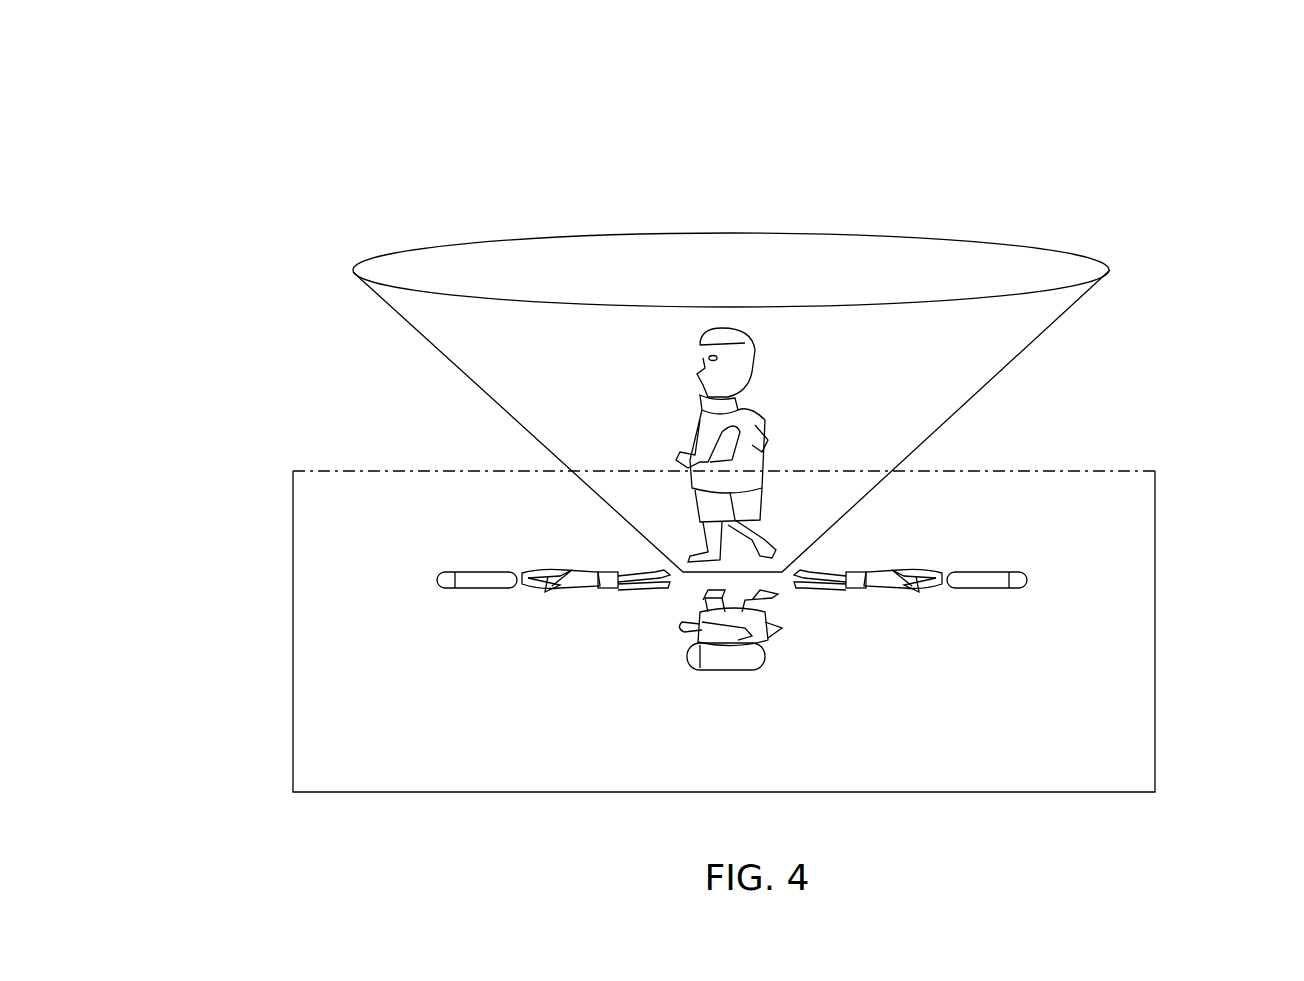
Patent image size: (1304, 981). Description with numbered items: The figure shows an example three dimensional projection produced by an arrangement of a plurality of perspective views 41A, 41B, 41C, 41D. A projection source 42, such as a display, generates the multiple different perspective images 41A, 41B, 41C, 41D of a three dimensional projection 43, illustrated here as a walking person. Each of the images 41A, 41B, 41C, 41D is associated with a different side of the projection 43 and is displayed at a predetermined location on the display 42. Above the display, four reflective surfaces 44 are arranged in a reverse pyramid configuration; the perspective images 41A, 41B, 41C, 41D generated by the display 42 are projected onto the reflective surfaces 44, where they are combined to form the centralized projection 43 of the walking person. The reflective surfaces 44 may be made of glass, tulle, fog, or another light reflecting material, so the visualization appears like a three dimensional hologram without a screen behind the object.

The reflective surfaces 44 is at (521, 342).
The 3D projection 43 is at (506, 308).
The projection source 42 is at (1066, 627).
The perspective view 41A is at (514, 596).
The perspective view 41B is at (724, 686).
The perspective view 41C is at (920, 610).
The perspective view 41D is at (674, 520).